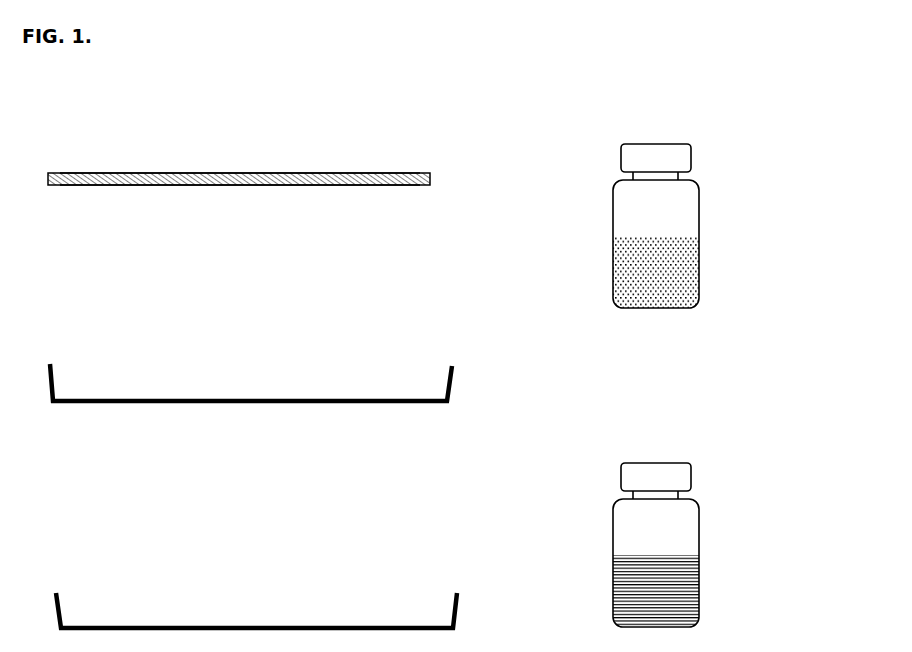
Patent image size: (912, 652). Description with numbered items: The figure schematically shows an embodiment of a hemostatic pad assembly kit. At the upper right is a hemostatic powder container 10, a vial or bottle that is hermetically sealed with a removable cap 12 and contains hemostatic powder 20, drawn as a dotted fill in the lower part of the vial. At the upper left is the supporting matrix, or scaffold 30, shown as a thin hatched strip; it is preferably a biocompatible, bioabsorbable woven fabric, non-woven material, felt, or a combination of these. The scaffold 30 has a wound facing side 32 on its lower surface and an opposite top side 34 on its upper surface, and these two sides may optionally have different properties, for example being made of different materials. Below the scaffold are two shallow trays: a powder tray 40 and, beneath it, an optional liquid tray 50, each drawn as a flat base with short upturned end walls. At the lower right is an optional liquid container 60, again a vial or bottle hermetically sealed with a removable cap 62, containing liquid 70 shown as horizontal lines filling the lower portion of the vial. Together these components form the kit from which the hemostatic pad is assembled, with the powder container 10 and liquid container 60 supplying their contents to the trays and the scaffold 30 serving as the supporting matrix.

The hemostatic powder container 10 is at (725, 221).
The removable cap 12 is at (706, 124).
The hemostatic powder 20 is at (710, 272).
The scaffold 30 is at (277, 194).
The wound facing side 32 is at (240, 222).
The opposite top side 34 is at (240, 136).
The powder tray 40 is at (268, 417).
The liquid tray 50 is at (294, 596).
The liquid container 60 is at (725, 542).
The removable cap 62 is at (706, 444).
The liquid 70 is at (710, 591).